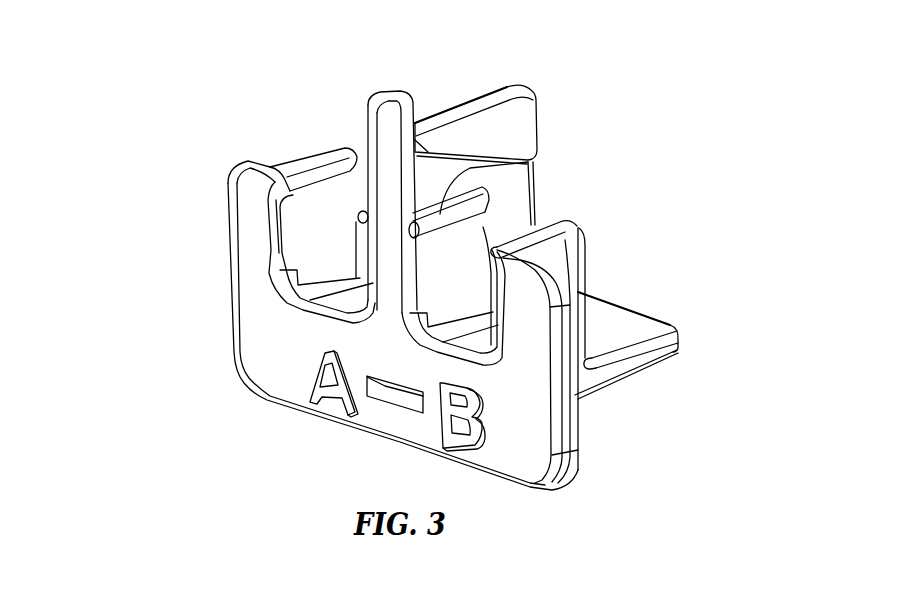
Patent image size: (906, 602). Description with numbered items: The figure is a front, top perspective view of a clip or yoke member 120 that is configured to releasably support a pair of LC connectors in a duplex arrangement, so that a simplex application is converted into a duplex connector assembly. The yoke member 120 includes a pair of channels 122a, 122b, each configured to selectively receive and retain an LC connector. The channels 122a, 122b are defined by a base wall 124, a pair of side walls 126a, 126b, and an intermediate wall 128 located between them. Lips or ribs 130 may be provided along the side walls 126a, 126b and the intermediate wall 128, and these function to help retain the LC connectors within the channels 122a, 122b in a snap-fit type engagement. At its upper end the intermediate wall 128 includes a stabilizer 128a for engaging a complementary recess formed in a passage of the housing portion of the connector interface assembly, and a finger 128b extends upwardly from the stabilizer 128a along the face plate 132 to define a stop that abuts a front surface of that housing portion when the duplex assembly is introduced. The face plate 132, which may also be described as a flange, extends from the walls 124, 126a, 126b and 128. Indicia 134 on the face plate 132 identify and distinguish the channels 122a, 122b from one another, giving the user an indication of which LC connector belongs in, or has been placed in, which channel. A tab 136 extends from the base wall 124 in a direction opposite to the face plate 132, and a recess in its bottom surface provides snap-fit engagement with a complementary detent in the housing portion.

The yoke member 120 is at (393, 265).
The channel 122a is at (322, 210).
The channel 122b is at (467, 258).
The base wall 124 is at (577, 392).
The side wall 126a is at (321, 158).
The side wall 126b is at (567, 250).
The intermediate wall 128 is at (483, 227).
The stabilizer 128a is at (507, 95).
The finger 128b is at (405, 103).
The lips or ribs 130 is at (257, 167).
The face plate 132 is at (257, 357).
The indicia 134 is at (488, 445).
The tab 136 is at (630, 325).